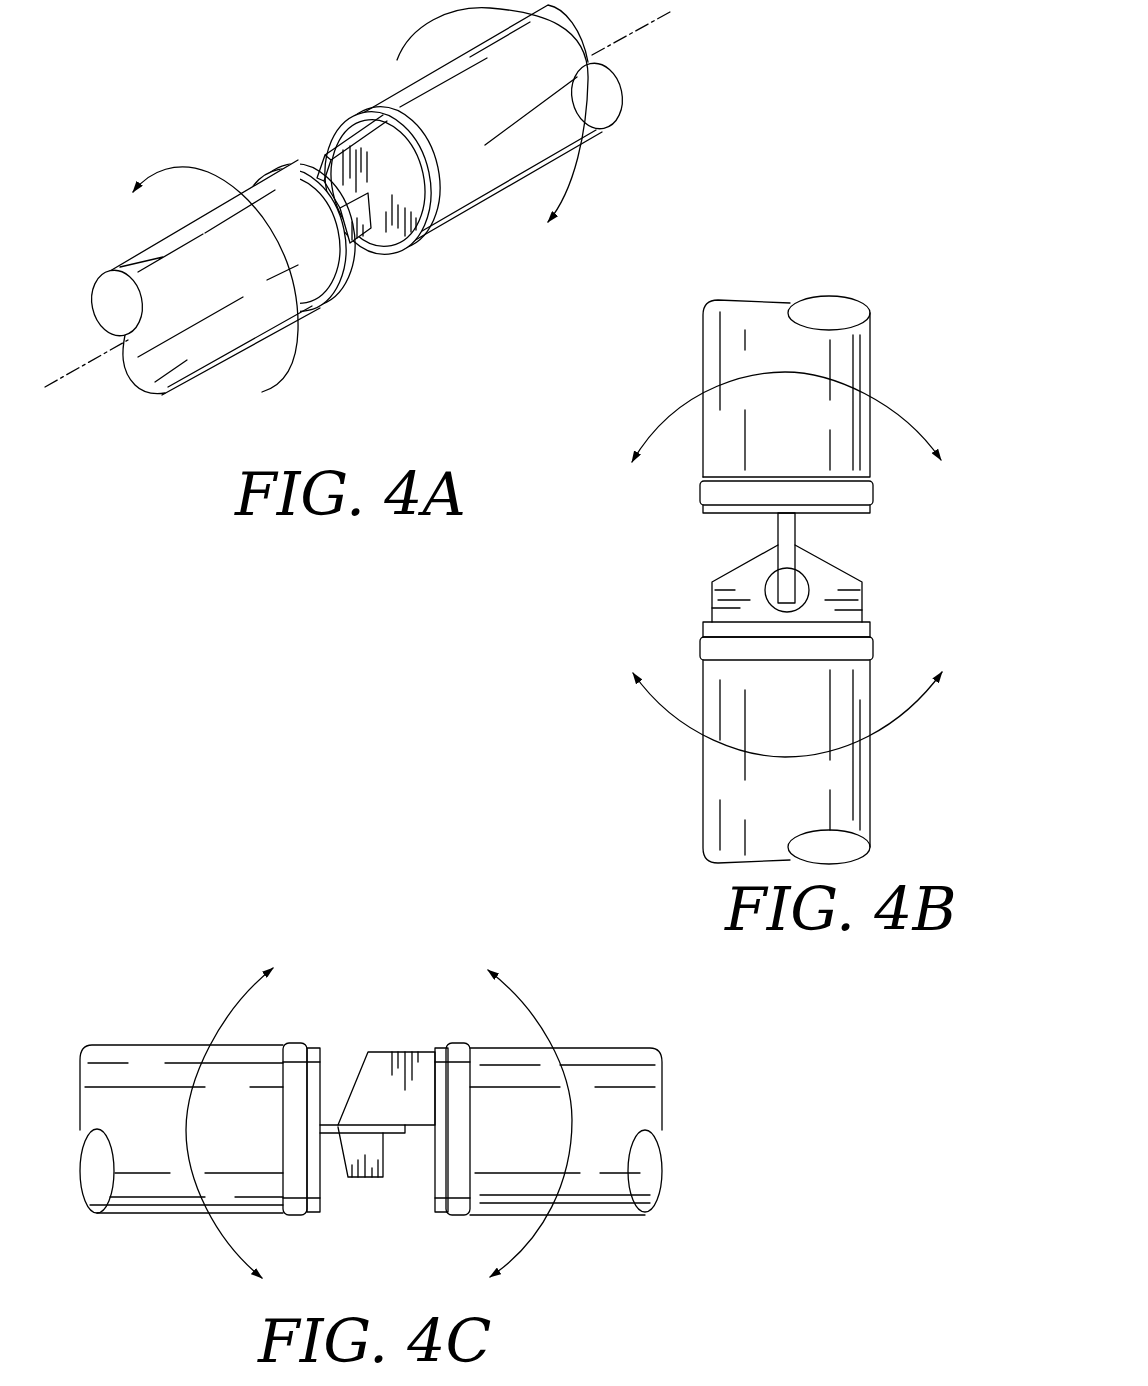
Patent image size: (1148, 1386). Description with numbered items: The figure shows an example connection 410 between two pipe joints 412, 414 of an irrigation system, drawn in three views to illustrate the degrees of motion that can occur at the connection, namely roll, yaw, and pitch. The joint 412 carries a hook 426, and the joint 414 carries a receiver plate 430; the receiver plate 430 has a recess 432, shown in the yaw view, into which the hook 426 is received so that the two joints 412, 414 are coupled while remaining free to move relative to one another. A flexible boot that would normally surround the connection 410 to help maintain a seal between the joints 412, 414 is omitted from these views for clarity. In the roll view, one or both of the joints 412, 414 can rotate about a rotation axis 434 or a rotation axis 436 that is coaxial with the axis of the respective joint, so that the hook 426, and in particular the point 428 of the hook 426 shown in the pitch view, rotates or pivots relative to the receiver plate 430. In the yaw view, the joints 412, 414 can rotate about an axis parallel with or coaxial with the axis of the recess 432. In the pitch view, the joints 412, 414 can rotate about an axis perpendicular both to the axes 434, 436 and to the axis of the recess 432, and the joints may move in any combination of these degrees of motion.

In FIG. 4A, the connection 410 is at (430, 246).
In FIG. 4B, the connection 410 is at (777, 580).
In FIG. 4C, the connection 410 is at (371, 1108).
In FIG. 4A, the joint 412 is at (470, 173).
In FIG. 4B, the joint 412 is at (843, 365).
In FIG. 4C, the joint 412 is at (603, 1075).
In FIG. 4A, the joint 414 is at (204, 341).
In FIG. 4B, the joint 414 is at (843, 808).
In FIG. 4C, the joint 414 is at (160, 1073).
In FIG. 4A, the hook 426 is at (373, 166).
In FIG. 4B, the hook 426 is at (792, 533).
In FIG. 4C, the hook 426 is at (378, 1083).
In FIG. 4C, the point 428 is at (352, 1153).
In FIG. 4A, the receiver plate 430 is at (369, 249).
In FIG. 4B, the receiver plate 430 is at (737, 583).
In FIG. 4C, the receiver plate 430 is at (398, 1130).
In FIG. 4B, the recess 432 is at (805, 585).
In FIG. 4A, the axis 434 is at (628, 35).
In FIG. 4A, the axis 436 is at (83, 362).